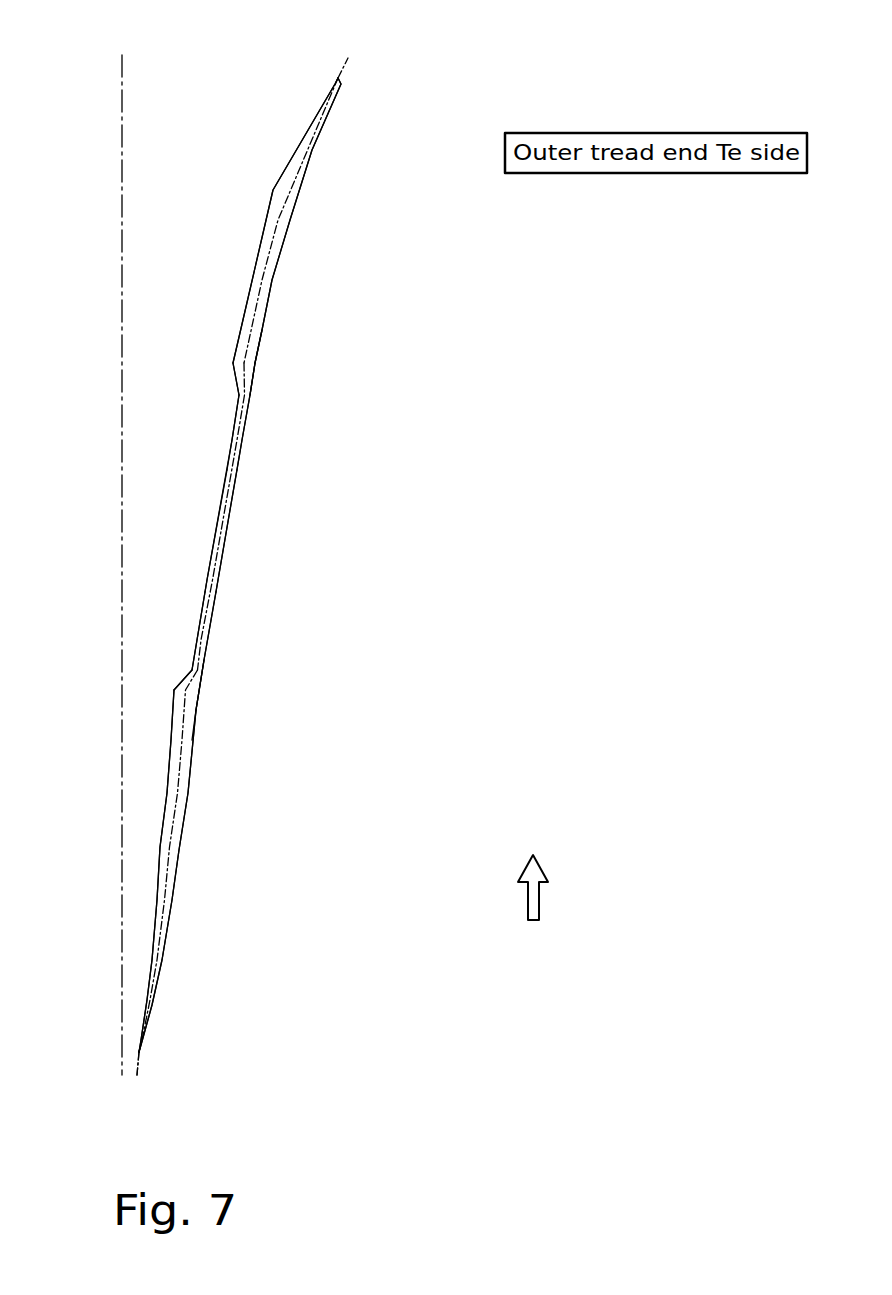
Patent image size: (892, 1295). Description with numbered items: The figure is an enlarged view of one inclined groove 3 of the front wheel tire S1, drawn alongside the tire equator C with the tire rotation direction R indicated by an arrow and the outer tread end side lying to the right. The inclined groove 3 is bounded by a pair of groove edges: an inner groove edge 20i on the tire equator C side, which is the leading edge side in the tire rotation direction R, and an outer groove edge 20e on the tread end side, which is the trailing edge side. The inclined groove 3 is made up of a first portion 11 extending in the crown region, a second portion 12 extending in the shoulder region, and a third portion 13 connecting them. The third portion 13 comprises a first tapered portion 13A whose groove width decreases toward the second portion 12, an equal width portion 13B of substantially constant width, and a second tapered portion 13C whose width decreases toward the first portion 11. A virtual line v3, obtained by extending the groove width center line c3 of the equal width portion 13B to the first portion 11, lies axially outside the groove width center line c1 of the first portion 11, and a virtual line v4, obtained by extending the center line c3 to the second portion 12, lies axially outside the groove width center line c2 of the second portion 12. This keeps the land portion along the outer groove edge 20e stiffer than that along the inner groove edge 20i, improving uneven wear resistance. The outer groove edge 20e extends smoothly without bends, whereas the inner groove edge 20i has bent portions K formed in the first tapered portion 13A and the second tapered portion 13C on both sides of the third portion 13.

The tire equator C is at (122, 78).
The front wheel tire S1 is at (431, 79).
The inner groove edge 20i is at (262, 235).
The outer groove edge 20e is at (272, 295).
The second portion 12 is at (315, 227).
The third portion 13 is at (249, 536).
The first tapered portion 13A is at (217, 678).
The equal width portion 13B is at (208, 533).
The second tapered portion 13C is at (288, 397).
The first portion 11 is at (222, 880).
The bent portions K is at (215, 370).
The virtual line v3 is at (196, 700).
The virtual line v4 is at (255, 364).
The groove width center line c1 is at (175, 800).
The groove width center line c2 is at (320, 110).
The groove width center line c3 is at (230, 475).
The inclined groove 3 is at (235, 1005).
The tire rotation direction R is at (533, 875).